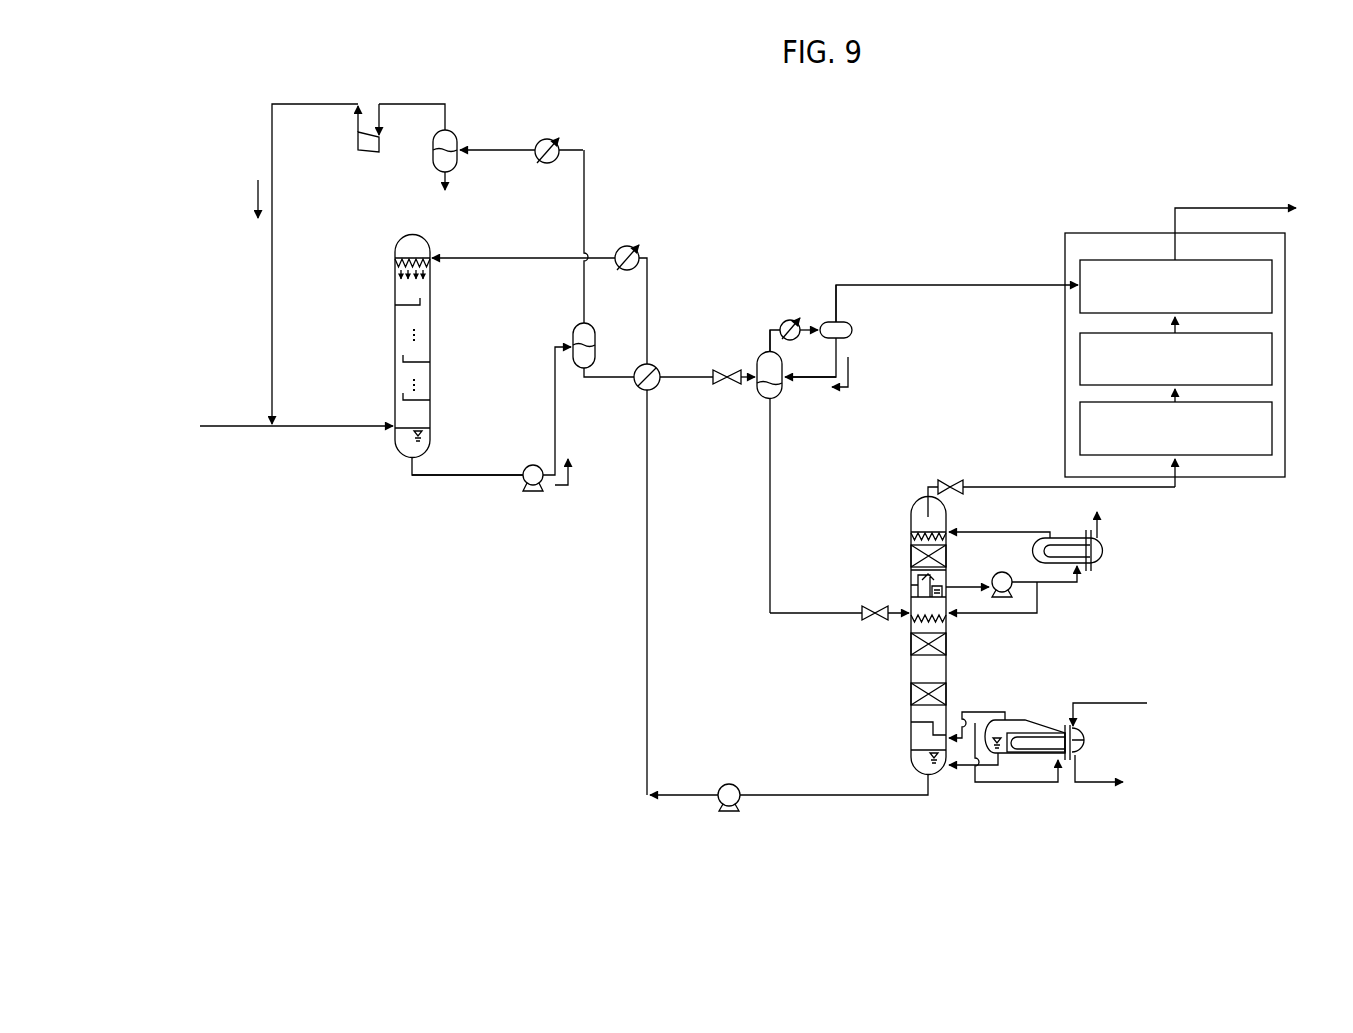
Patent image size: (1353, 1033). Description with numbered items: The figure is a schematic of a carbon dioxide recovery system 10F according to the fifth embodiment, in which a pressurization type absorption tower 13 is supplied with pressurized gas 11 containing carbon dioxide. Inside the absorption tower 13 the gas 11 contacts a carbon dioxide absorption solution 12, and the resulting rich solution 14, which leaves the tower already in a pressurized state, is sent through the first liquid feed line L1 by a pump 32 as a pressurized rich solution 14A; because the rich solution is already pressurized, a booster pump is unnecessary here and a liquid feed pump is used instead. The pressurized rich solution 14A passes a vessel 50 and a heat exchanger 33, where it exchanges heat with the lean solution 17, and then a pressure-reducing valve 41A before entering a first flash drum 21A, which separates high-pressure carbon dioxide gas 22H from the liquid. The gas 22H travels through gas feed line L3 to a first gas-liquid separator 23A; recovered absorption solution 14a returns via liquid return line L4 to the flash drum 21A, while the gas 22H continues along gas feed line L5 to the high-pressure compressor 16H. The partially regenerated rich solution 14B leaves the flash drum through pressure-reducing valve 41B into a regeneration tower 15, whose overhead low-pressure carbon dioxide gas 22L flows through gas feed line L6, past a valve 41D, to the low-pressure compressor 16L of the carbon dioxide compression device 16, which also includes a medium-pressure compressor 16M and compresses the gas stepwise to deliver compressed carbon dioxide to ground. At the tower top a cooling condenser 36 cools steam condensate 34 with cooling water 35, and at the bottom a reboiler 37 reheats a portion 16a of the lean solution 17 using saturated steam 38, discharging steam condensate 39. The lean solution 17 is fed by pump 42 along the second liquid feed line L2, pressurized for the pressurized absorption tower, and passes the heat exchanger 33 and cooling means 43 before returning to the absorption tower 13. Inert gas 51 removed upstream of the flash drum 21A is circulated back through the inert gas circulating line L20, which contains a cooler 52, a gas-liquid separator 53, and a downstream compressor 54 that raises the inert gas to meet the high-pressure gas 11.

The CO2 recovery system 10F is at (843, 179).
The gas containing CO2 11 is at (376, 442).
The CO2 absorption solution 12 is at (393, 262).
The absorption tower 13 is at (378, 323).
The rich solution 14 is at (501, 485).
The pressurized rich solution 14A is at (562, 495).
The partially regenerated rich solution 14B is at (757, 420).
The absorption solution 14a is at (846, 392).
The regeneration tower 15 is at (953, 658).
The CO2 compression device 16 is at (1207, 348).
The high-pressure compressor 16H is at (1273, 287).
The medium-pressure compressor 16M is at (1273, 360).
The low-pressure compressor 16L is at (1273, 432).
The portion of lean solution 16a is at (1013, 795).
The lean solution 17 is at (797, 805).
The first flash drum 21A is at (759, 349).
The high-pressure CO2 gas 22H is at (948, 275).
The low-pressure CO2 gas 22L is at (1003, 477).
The first gas-liquid separator 23A is at (855, 330).
The booster pump 32 is at (528, 465).
The heat exchanger 33 is at (636, 366).
The steam condensate 34 is at (948, 590).
The cooling water 35 is at (1097, 568).
The cooling condenser 36 is at (1073, 538).
The reboiler 37 is at (1033, 712).
The saturated steam 38 is at (1102, 715).
The steam condensate 39 is at (1108, 795).
The pressure-reducing valve 41A is at (713, 369).
The pressure-reducing valve 41B is at (866, 607).
The pressure reducing valve 41D is at (952, 493).
The liquid feed pump 42 is at (728, 812).
The cooling means 43 is at (628, 271).
The flash drum 50 is at (572, 333).
The inert gas 51 is at (593, 181).
The cooler 52 is at (548, 165).
The gas-liquid separator 53 is at (458, 165).
The compressor 54 is at (370, 153).
The first liquid feed line L1 is at (432, 480).
The second liquid feed line L2 is at (770, 790).
The gas feed line L3 is at (774, 345).
The liquid return line L4 is at (815, 379).
The gas feed line L5 is at (848, 286).
The gas feed line L6 is at (1122, 490).
The inert gas circulating line L20 is at (274, 130).